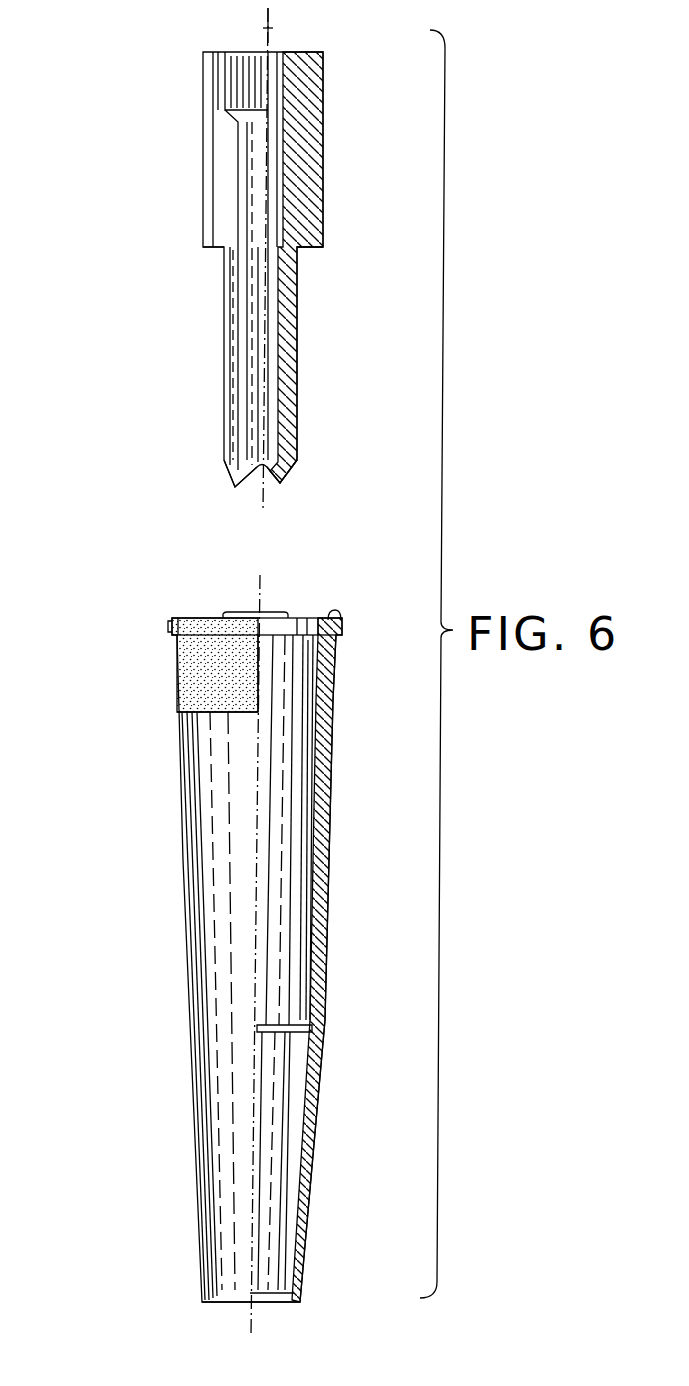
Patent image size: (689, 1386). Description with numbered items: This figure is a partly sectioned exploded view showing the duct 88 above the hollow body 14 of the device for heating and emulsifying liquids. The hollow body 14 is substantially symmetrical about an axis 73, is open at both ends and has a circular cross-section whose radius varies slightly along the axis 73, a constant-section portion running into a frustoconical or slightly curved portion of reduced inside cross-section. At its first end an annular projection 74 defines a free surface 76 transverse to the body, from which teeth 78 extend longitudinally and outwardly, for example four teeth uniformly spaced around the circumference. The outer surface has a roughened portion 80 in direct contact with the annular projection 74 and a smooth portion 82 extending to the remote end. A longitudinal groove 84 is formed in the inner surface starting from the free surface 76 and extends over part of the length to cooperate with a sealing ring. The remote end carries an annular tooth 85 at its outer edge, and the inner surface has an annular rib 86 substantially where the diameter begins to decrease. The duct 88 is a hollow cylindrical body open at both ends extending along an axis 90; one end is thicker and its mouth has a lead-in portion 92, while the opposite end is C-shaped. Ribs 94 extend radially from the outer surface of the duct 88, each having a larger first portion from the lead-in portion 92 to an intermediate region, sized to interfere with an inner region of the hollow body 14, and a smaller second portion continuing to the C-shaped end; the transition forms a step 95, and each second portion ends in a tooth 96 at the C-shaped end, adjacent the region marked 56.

The hollow body 14 is at (200, 972).
The tip end 56 is at (298, 458).
The axis 73 is at (262, 612).
The annular projection 74 is at (175, 628).
The free surface 76 is at (350, 611).
The teeth 78 is at (183, 614).
The roughened portion 80 is at (180, 683).
The smooth portion 82 is at (210, 870).
The longitudinal groove 84 is at (310, 668).
The annular tooth 85 is at (305, 1295).
The annular rib 86 is at (318, 1020).
The duct 88 is at (198, 184).
The axis 90 is at (273, 28).
The lead-in portion 92 is at (292, 52).
The ribs 94 is at (203, 145).
The step 95 is at (210, 250).
The tooth 96 is at (222, 461).